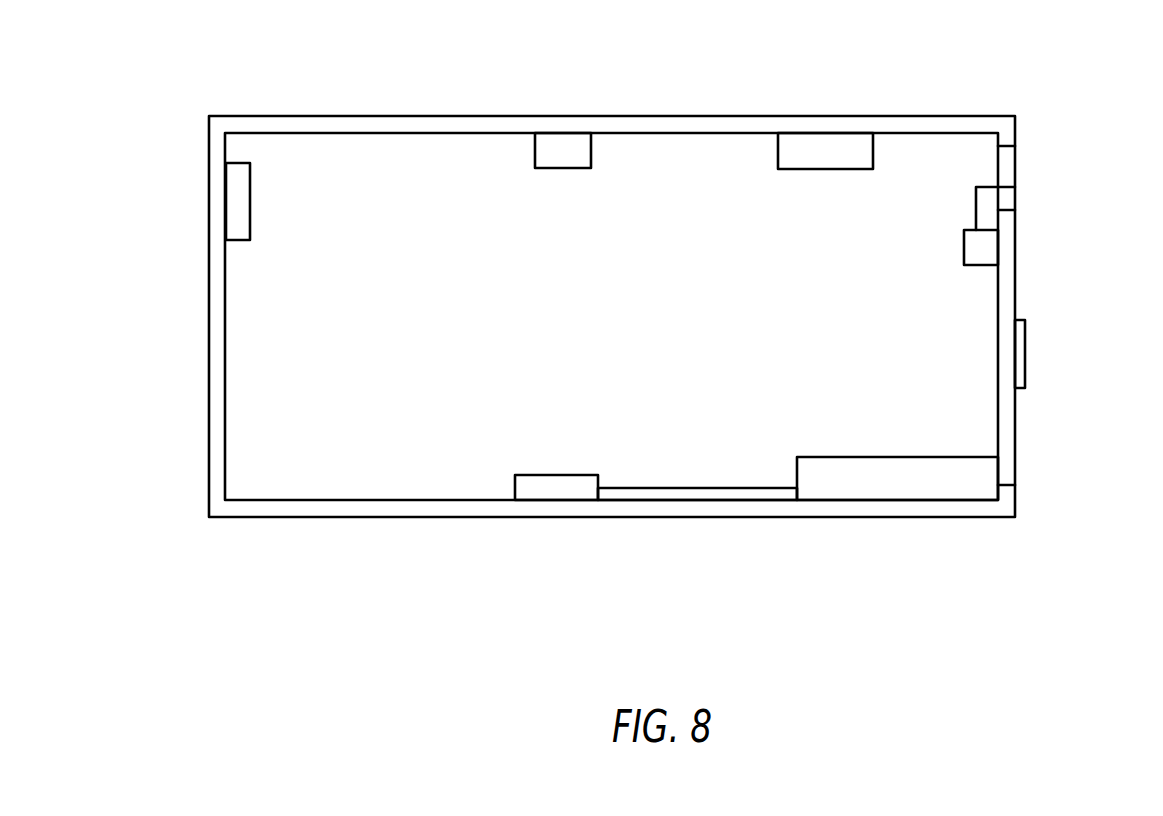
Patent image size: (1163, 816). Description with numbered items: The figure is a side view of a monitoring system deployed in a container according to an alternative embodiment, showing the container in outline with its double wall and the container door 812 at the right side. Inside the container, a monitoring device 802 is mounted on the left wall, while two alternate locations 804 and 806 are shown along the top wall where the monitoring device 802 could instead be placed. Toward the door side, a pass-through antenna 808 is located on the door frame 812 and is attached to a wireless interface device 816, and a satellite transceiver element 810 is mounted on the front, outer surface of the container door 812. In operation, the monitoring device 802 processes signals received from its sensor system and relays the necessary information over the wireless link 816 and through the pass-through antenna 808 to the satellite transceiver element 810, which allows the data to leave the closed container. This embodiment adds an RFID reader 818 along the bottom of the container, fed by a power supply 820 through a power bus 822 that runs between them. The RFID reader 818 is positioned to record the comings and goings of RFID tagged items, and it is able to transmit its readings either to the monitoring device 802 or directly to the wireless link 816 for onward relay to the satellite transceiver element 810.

The monitoring device 802 is at (233, 202).
The alternate location 804 is at (560, 155).
The alternate location 806 is at (848, 155).
The pass-through antenna 808 is at (1007, 198).
The satellite transceiver element 810 is at (1018, 352).
The container door 812 is at (1005, 445).
The wireless interface device 816 is at (980, 253).
The RFID reader 818 is at (862, 487).
The power supply 820 is at (553, 487).
The power bus 822 is at (715, 493).